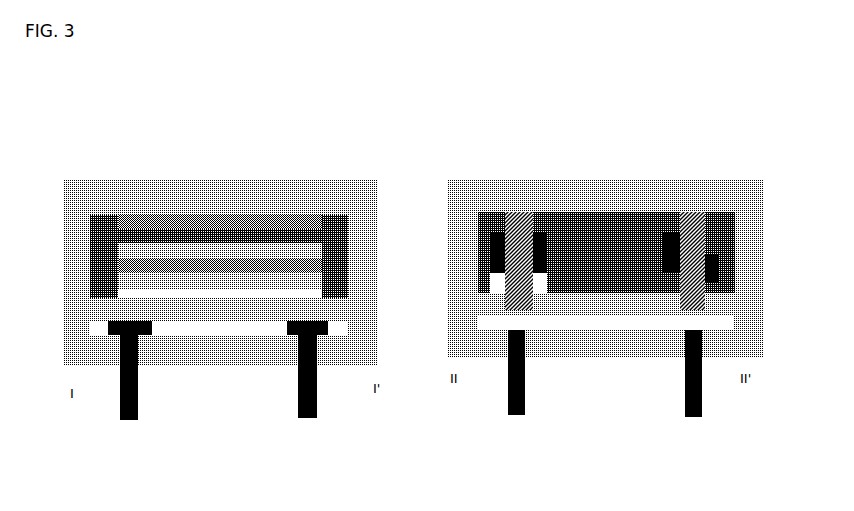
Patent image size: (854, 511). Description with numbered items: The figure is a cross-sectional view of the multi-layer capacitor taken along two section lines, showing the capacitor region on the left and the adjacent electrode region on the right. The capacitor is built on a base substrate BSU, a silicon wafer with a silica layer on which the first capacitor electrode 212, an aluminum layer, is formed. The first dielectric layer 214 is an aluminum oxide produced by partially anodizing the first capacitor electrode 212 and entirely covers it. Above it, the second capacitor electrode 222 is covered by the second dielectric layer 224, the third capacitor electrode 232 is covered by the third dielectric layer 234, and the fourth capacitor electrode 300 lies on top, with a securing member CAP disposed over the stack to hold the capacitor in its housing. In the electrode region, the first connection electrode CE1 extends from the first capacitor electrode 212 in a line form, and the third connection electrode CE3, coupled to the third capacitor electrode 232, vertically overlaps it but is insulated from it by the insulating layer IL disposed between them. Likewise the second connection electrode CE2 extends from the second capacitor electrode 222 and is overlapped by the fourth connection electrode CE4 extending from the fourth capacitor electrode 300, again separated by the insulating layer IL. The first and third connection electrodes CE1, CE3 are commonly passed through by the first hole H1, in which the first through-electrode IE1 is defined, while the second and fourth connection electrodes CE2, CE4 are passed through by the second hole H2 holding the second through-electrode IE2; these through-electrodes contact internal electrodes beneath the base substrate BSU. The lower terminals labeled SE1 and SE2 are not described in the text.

The second capacitor electrode 222 is at (135, 268).
The second dielectric layer 224 is at (160, 255).
The third capacitor electrode 232 is at (218, 250).
The third dielectric layer 234 is at (249, 238).
The fourth capacitor electrode 300 is at (302, 225).
The securing member CAP is at (339, 190).
The first capacitor electrode 212 is at (153, 293).
The first dielectric layer 214 is at (168, 288).
The first signal electrode SE1 is at (129, 420).
The second signal electrode SE2 is at (308, 418).
The first through-electrode IE1 is at (511, 218).
The second through-electrode IE2 is at (688, 216).
The first hole H1 is at (520, 216).
The second hole H2 is at (700, 214).
The first connection electrode CE1 is at (540, 285).
The second connection electrode CE2 is at (674, 300).
The third connection electrode CE3 is at (537, 242).
The fourth connection electrode CE4 is at (717, 225).
The insulating layer IL is at (712, 224).
The base substrate BSU is at (722, 304).